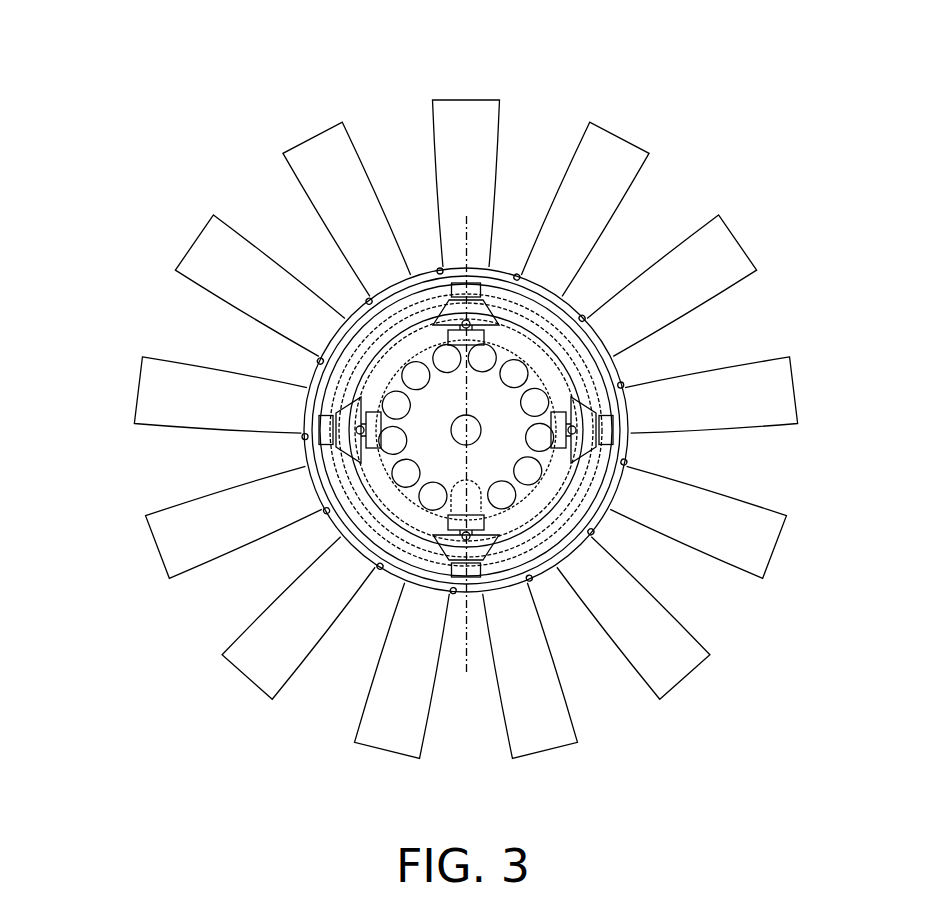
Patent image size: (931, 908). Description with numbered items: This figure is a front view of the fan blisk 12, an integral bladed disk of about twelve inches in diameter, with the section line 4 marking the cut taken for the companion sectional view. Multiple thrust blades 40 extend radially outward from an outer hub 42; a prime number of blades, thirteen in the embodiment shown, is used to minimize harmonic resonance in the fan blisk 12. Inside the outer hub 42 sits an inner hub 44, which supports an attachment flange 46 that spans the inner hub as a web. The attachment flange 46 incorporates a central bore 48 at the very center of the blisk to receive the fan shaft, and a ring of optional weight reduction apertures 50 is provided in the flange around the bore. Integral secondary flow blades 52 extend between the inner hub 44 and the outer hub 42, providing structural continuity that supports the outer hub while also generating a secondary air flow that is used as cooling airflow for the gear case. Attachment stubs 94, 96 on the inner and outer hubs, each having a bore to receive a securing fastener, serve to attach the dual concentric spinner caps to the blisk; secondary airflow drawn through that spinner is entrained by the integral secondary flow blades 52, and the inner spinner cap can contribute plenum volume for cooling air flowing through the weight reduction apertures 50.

The fan blisk 12 is at (396, 141).
The thrust blades 40 is at (478, 143).
The outer hub 42 is at (500, 263).
The inner hub 44 is at (547, 482).
The attachment flange 46 is at (498, 417).
The central bore 48 is at (457, 427).
The weight reduction apertures 50 is at (517, 377).
The integral secondary flow blades 52 is at (580, 472).
The attachment stub 94 is at (370, 425).
The attachment stub 96 is at (325, 432).
The section line 4- 4 is at (466, 216).